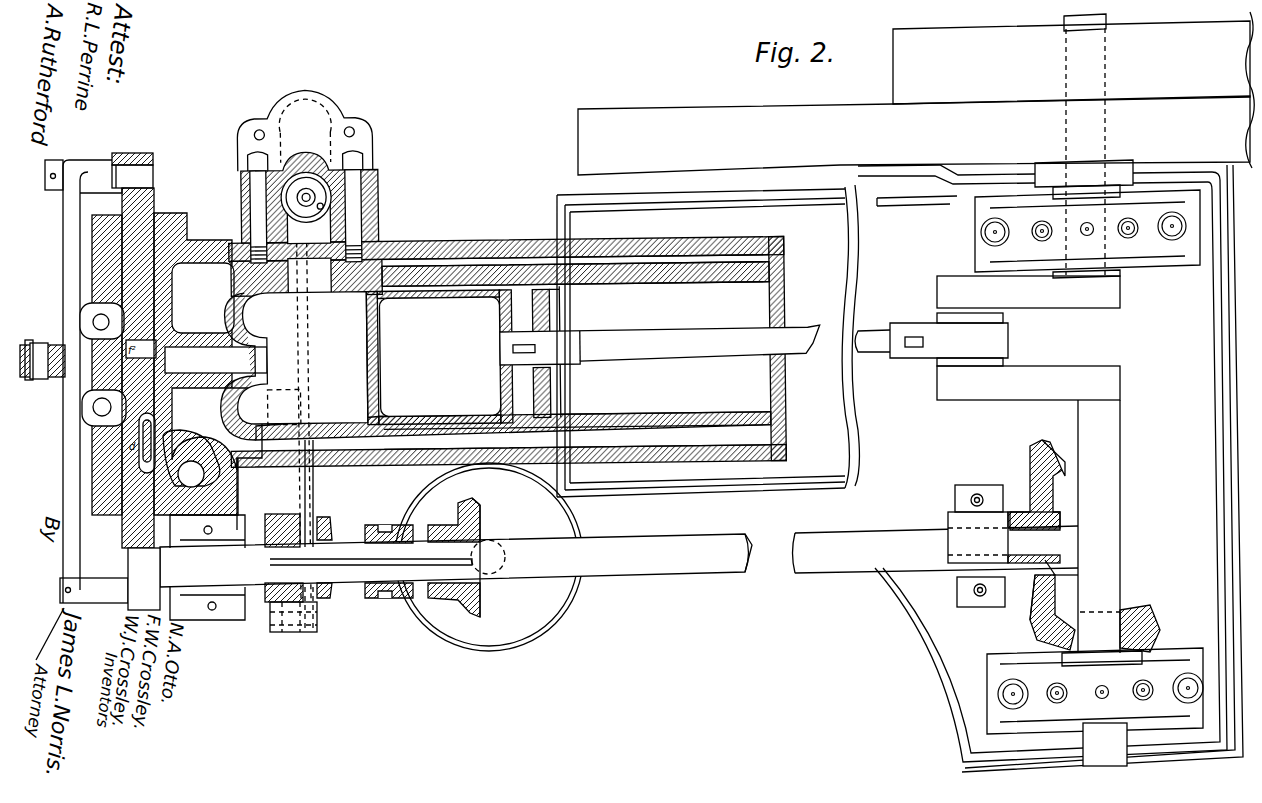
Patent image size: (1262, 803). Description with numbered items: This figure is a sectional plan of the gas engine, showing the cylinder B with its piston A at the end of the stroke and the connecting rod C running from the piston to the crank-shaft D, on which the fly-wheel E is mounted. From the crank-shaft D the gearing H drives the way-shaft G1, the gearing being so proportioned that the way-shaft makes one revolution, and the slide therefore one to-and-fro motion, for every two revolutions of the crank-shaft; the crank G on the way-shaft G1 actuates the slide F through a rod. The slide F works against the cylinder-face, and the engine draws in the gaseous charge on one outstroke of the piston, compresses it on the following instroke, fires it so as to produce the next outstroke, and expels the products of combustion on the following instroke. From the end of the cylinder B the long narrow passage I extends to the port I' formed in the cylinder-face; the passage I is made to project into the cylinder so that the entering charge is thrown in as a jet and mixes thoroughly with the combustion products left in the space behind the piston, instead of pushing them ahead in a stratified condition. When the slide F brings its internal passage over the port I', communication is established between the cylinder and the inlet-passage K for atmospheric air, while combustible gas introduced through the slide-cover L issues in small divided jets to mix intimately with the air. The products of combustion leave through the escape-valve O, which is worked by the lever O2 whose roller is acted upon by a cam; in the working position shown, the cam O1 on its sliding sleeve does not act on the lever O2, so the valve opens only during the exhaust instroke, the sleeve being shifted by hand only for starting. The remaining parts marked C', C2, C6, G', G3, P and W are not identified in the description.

The piston A is at (463, 355).
The cylinder B is at (588, 395).
The rod C is at (660, 345).
The valve chamber passage C' is at (104, 408).
The collar C2 is at (288, 536).
The pivot C6 is at (102, 321).
The crank-shaft D is at (1099, 526).
The fly-wheel E is at (916, 143).
The slide F is at (147, 350).
The crank G is at (186, 567).
The secondary shaft G' is at (936, 546).
The way-shaft G1 is at (456, 560).
The lever G3 is at (86, 381).
The gearing H is at (1095, 606).
The passage I is at (216, 318).
The port I' is at (173, 357).
The inlet-passage K is at (212, 437).
The slide-cover L is at (107, 365).
The escape-valve O is at (300, 346).
The cam O1 is at (291, 567).
The lever O2 is at (318, 536).
The flywheel P is at (489, 557).
The cam collar W is at (422, 557).